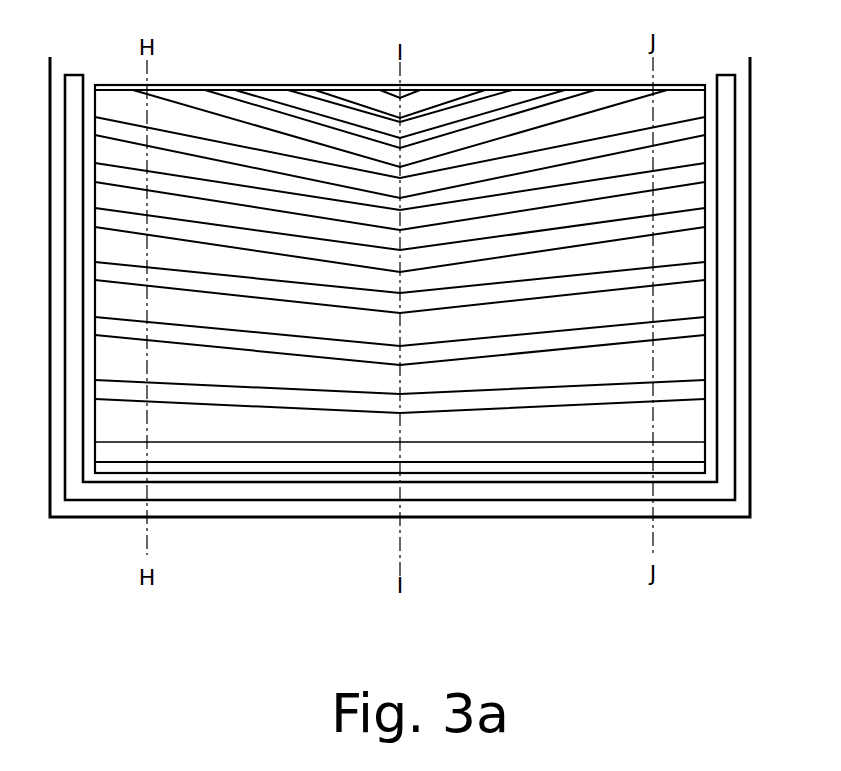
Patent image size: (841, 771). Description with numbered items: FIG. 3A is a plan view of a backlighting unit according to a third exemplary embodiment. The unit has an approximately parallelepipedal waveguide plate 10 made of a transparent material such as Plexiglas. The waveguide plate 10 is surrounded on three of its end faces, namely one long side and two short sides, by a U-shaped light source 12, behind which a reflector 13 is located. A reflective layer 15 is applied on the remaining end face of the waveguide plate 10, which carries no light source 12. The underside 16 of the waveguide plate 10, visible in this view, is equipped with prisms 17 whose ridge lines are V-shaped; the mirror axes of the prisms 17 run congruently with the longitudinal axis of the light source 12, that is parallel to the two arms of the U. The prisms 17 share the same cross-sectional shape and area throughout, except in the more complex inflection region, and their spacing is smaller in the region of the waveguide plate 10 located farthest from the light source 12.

The waveguide plate 10 is at (400, 293).
The light source 12 is at (74, 87).
The reflector 13 is at (535, 518).
The reflective layer 15 is at (540, 88).
The underside 16 is at (285, 430).
The prisms 17 is at (287, 102).